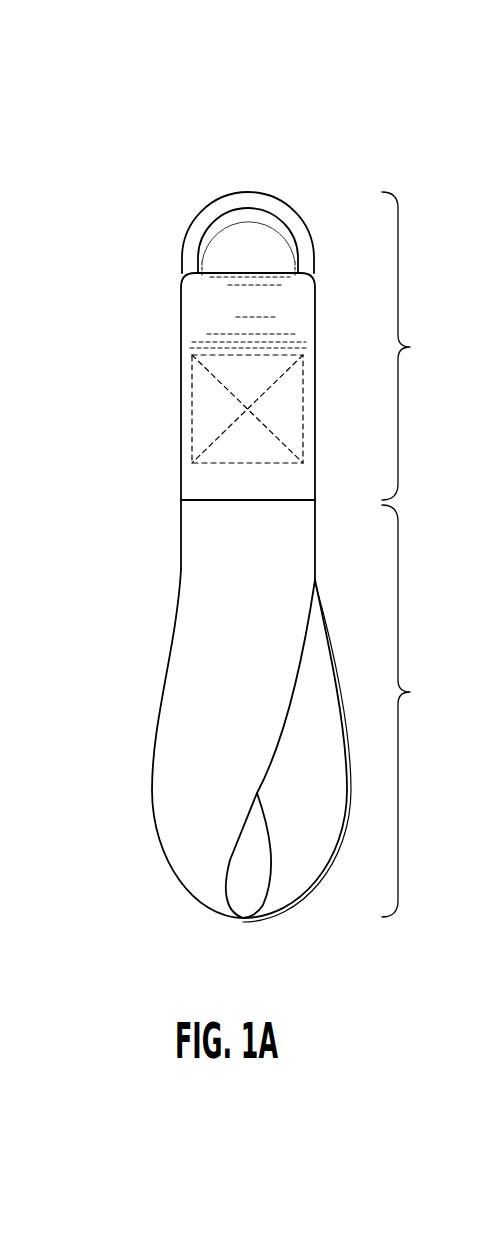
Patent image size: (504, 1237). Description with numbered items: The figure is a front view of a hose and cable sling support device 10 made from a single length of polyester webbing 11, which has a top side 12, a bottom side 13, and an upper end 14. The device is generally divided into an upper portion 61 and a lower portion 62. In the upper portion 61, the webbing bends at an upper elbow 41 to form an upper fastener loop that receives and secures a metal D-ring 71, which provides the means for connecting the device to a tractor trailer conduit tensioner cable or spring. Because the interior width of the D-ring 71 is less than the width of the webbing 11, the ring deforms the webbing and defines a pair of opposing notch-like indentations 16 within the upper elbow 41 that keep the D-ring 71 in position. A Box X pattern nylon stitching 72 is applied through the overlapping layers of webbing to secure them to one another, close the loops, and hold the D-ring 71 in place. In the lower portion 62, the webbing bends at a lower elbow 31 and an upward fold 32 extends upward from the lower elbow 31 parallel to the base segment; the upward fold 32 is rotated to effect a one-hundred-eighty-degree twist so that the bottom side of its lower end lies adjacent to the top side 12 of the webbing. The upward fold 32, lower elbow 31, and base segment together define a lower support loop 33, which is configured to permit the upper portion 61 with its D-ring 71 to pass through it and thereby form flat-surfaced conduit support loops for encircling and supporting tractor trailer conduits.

The hose and cable sling support device 10 is at (122, 45).
The metal D-ring 71 is at (248, 198).
The upper elbow 41 is at (240, 268).
The pair of opposing notch-like indentations 16 is at (180, 283).
The bottom side 13 is at (210, 312).
The Box X pattern nylon stitching 72 is at (225, 425).
The upper end 14 is at (232, 503).
The length of polyester webbing 11 is at (160, 592).
The upward fold 32 is at (170, 645).
The top side 12 is at (235, 652).
The upper portion 61 is at (411, 346).
The lower portion 62 is at (412, 711).
The lower support loop 33 is at (248, 893).
The lower elbow 31 is at (251, 921).